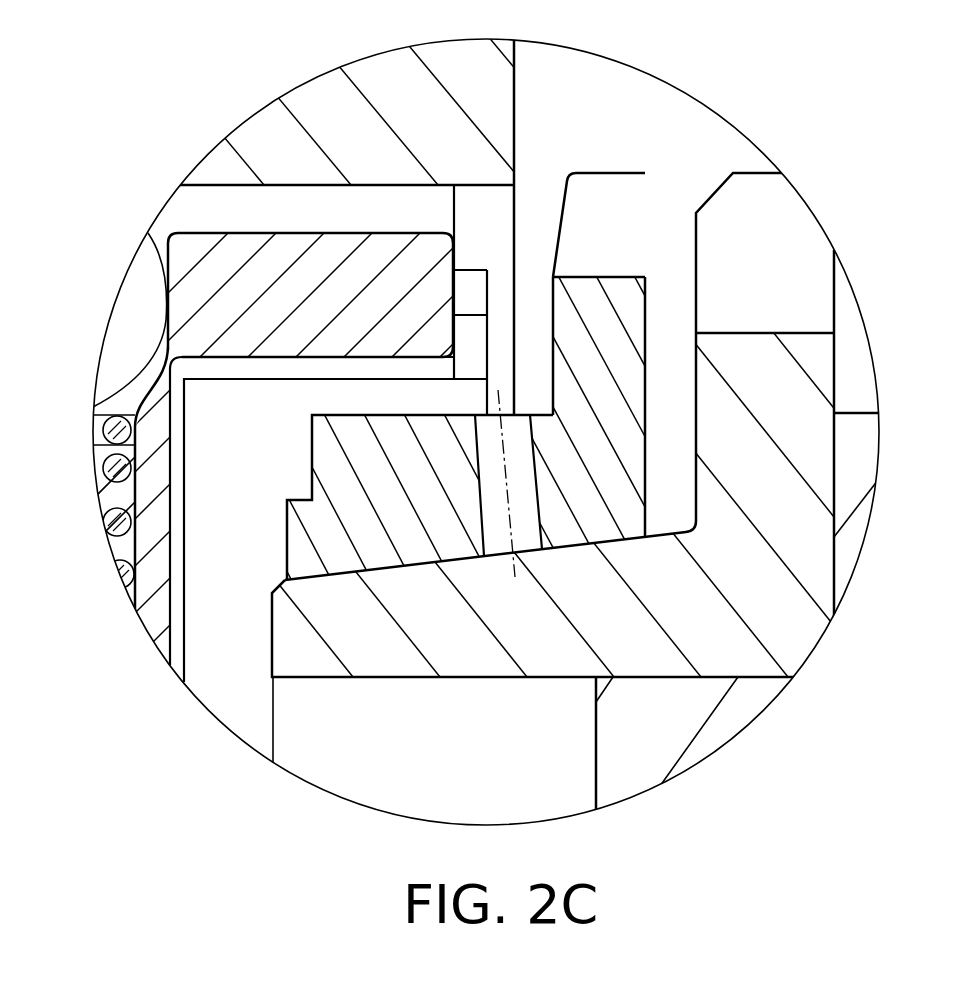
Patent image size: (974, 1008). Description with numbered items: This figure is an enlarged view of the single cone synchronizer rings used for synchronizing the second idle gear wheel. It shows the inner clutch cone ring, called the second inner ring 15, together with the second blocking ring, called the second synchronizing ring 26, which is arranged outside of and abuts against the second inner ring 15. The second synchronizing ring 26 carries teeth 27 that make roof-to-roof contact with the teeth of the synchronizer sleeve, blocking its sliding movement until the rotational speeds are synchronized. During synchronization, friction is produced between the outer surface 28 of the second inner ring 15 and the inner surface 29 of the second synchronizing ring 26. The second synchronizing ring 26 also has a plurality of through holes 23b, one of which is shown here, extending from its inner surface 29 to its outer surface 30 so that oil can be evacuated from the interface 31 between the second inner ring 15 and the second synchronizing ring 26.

The inner clutch cone ring 15 is at (773, 400).
The through holes 23b is at (520, 473).
The second blocking ring 26 is at (602, 388).
The teeth 27 is at (598, 222).
The outer surface 28 is at (378, 552).
The inner surface 29 is at (580, 553).
The outer surface 30 is at (381, 400).
The interface 31 is at (478, 553).